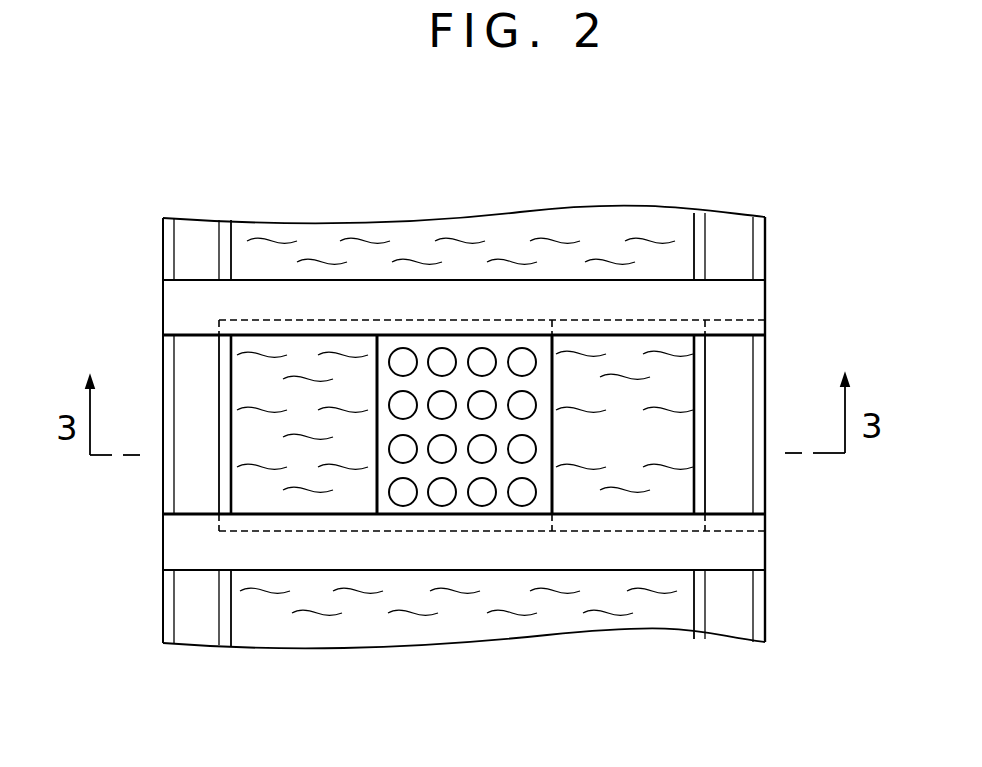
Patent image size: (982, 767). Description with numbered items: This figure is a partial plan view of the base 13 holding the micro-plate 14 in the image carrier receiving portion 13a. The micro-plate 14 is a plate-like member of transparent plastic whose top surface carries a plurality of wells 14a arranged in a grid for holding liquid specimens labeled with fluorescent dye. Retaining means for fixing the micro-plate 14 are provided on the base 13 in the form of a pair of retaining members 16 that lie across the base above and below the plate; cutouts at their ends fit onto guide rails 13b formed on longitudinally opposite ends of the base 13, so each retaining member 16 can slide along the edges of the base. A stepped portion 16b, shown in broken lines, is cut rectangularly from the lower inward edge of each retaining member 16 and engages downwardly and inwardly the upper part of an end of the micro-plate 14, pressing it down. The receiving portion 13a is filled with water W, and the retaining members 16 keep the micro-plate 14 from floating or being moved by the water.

The base 13 is at (765, 362).
The image carrier receiving portion 13a is at (693, 265).
The guide rails 13b is at (729, 231).
The micro-plate 14 is at (534, 505).
The wells 14a is at (405, 495).
The retaining members 16 is at (578, 300).
The stepped portion 16b is at (355, 325).
The water W is at (641, 445).